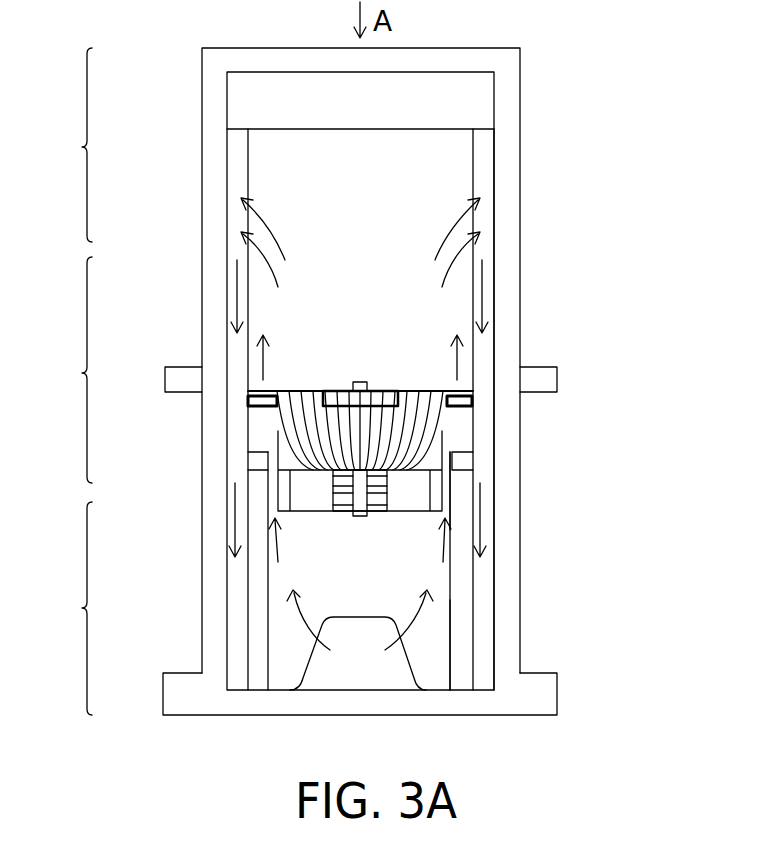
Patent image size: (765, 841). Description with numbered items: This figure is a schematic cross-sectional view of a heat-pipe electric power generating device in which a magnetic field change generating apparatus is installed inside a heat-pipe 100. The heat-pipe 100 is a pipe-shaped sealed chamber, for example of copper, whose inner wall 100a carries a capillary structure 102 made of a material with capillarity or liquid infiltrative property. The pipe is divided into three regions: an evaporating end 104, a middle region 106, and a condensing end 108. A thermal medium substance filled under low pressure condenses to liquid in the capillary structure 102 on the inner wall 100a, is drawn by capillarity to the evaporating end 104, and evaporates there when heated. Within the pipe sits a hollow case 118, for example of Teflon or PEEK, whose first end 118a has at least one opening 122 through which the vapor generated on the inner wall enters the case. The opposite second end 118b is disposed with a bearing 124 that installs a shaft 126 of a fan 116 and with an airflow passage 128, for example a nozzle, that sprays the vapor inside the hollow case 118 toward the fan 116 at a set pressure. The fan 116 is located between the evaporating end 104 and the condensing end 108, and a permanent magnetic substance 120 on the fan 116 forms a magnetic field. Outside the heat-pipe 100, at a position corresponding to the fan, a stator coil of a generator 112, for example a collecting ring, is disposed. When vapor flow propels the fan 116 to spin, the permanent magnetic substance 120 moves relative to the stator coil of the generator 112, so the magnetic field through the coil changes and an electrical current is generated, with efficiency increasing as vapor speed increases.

The heat-pipe 100 is at (503, 637).
The inner wall 100a is at (505, 561).
The capillary structure 102 is at (482, 252).
The evaporating end 104 is at (63, 608).
The middle region 106 is at (63, 370).
The condensing end 108 is at (63, 145).
The stator coil of a generator 112 is at (543, 368).
The fan 116 is at (445, 418).
The hollow case 118 is at (457, 623).
The first end 118a is at (484, 668).
The second end 118b is at (485, 470).
The permanent magnetic substance 120 is at (463, 393).
The opening 122 is at (322, 663).
The bearing 124 is at (377, 497).
The shaft 126 is at (358, 382).
The airflow passage 128 is at (447, 462).